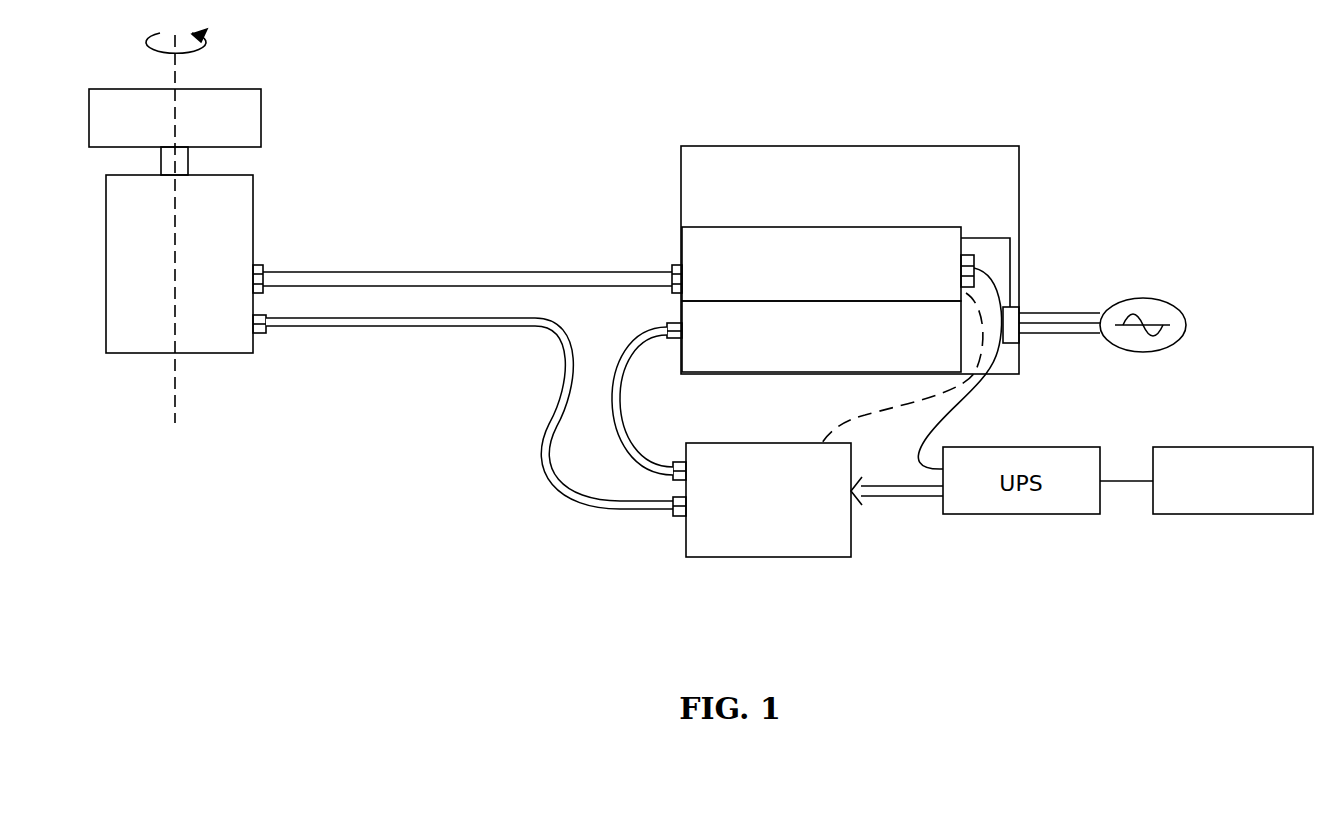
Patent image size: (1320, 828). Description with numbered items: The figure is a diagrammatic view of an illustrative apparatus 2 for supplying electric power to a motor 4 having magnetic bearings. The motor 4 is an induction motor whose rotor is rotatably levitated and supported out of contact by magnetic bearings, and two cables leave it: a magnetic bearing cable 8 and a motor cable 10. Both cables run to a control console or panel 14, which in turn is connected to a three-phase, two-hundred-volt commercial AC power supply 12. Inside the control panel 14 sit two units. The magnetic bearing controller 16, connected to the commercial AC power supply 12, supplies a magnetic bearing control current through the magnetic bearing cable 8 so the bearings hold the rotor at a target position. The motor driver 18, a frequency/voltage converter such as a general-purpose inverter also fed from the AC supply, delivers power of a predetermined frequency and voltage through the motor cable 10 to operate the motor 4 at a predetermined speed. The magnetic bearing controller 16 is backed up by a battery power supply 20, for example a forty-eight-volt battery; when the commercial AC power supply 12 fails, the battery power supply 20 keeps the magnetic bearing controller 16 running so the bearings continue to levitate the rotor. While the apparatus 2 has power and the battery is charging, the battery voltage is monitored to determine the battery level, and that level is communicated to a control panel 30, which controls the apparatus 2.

The apparatus 2 is at (1106, 150).
The motor 4 is at (145, 353).
The magnetic bearing cable 8 is at (413, 271).
The motor cable 10 is at (408, 330).
The commercial AC power supply 12 is at (1143, 297).
The control console or panel 14 is at (827, 146).
The magnetic bearing controller 16 is at (888, 227).
The motor driver 18 is at (755, 373).
The battery power supply 20 is at (1233, 514).
The control panel 30 is at (713, 558).